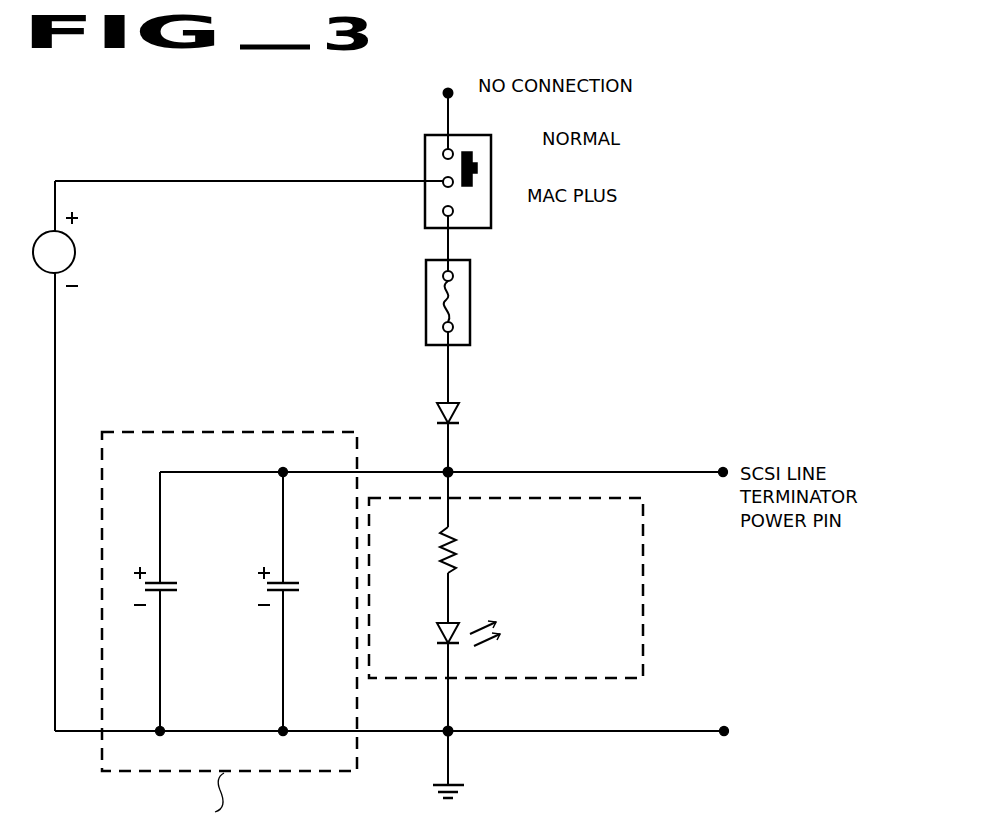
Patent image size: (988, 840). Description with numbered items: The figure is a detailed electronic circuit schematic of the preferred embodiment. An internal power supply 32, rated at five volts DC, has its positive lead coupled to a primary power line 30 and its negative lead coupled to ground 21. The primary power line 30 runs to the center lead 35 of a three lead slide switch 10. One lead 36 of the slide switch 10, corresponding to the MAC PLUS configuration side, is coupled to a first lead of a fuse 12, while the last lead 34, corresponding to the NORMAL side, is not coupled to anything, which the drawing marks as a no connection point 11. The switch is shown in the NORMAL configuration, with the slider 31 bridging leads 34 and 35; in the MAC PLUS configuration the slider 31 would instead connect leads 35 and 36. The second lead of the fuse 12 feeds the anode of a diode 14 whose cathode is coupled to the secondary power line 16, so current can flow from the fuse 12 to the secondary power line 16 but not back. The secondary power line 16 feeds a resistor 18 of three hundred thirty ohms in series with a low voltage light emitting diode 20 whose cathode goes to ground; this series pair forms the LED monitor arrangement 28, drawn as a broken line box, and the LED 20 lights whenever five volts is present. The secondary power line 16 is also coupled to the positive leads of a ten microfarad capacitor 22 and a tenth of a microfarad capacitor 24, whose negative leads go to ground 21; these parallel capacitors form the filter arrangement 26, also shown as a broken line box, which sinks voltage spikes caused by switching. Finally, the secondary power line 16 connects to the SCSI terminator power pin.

The slide switch 10 is at (423, 167).
The no connection terminal line 11 is at (452, 124).
The fuse 12 is at (424, 308).
The diode 14 is at (436, 412).
The secondary power line 16 is at (659, 476).
The resistor 18 is at (442, 546).
The light emitting diode 20 is at (438, 634).
The ground 21 is at (537, 734).
The capacitor 22 is at (166, 578).
The capacitor 24 is at (288, 578).
The filter arrangement 26 is at (288, 775).
The LED monitor arrangement 28 is at (661, 603).
The primary power line 30 is at (170, 183).
The slider 31 is at (479, 168).
The internal power supply 32 is at (76, 263).
The lead 34 is at (444, 148).
The center lead 35 is at (442, 186).
The lead 36 is at (442, 213).